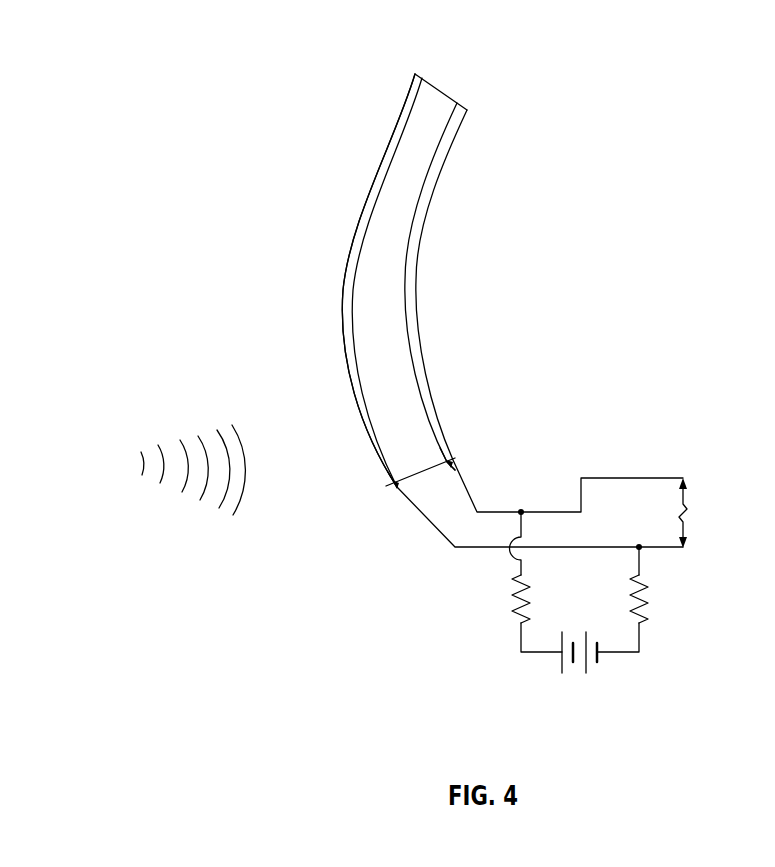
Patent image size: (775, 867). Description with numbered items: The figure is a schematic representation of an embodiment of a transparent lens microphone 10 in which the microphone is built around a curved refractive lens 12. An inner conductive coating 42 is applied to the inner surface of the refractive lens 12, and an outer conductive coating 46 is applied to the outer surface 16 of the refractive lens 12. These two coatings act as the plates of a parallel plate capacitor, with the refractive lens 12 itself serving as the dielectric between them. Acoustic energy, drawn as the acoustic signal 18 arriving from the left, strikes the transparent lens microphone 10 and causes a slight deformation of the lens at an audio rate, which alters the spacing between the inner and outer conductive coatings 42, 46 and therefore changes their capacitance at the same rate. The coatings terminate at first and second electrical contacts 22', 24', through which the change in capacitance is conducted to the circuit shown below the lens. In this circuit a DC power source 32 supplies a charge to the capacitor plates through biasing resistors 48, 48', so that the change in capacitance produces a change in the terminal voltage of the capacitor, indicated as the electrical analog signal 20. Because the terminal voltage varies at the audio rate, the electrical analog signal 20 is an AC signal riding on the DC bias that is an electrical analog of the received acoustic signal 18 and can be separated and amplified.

The transparent lens microphone 10 is at (247, 71).
The refractive lens 12 is at (418, 434).
The outer surface 16 is at (342, 294).
The acoustic signal 18 is at (243, 490).
The electrical analog signal 20 is at (690, 508).
The first electrical contact 22' is at (478, 449).
The second electrical contact 24' is at (371, 498).
The power source 32 is at (560, 658).
The inner conductive coating 42 is at (410, 315).
The outer conductive coating 46 is at (352, 367).
The biasing resistor 48 is at (490, 608).
The biasing resistor 48' is at (675, 606).